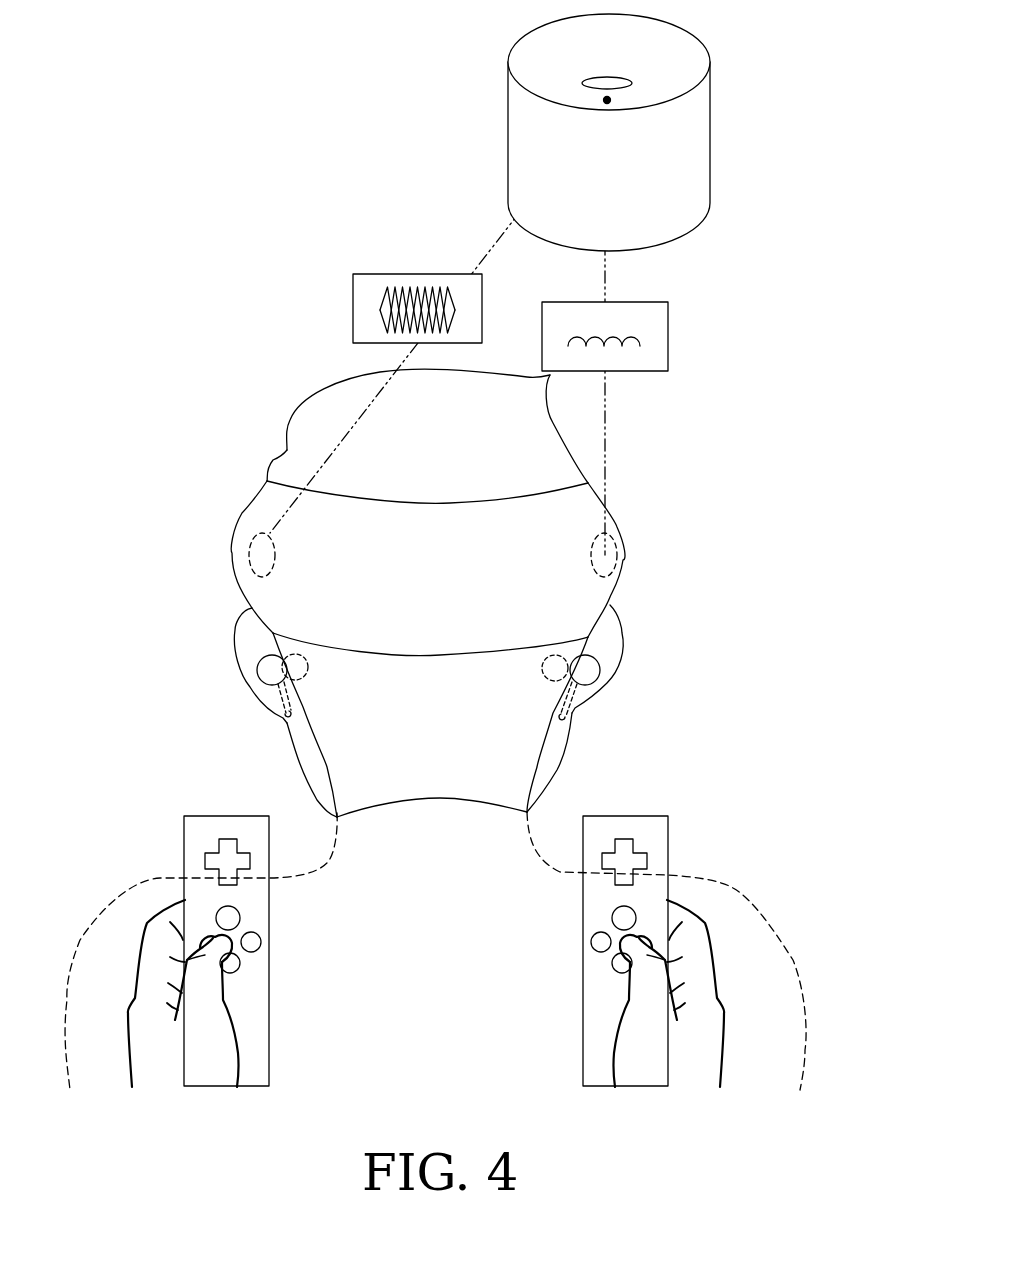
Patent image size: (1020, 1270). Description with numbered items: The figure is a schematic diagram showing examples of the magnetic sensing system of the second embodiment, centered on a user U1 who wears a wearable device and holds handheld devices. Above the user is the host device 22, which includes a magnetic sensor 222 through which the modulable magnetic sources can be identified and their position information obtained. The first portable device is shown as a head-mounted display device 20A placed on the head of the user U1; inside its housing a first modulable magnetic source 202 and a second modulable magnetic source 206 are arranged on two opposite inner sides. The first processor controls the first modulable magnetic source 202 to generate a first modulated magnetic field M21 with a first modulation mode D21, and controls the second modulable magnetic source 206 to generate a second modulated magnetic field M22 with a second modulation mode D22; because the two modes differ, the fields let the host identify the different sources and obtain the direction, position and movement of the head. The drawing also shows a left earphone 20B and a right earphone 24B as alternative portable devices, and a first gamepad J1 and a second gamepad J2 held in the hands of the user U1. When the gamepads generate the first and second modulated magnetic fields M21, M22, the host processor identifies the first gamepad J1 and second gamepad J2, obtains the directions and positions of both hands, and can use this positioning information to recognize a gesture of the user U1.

The host device 22 is at (710, 130).
The magnetic sensor 222 is at (609, 102).
The first modulation mode D21 is at (353, 308).
The second modulation mode D22 is at (668, 337).
The first modulated magnetic field M21 is at (345, 436).
The second modulated magnetic field M22 is at (606, 448).
The head-mounted display device 20A is at (250, 505).
The first modulable magnetic source 202 is at (249, 555).
The second modulable magnetic source 206 is at (617, 557).
The left earphone 20B is at (257, 668).
The right earphone 24B is at (600, 668).
The first gamepad J1 is at (184, 830).
The second gamepad J2 is at (668, 832).
The user U1 is at (745, 887).